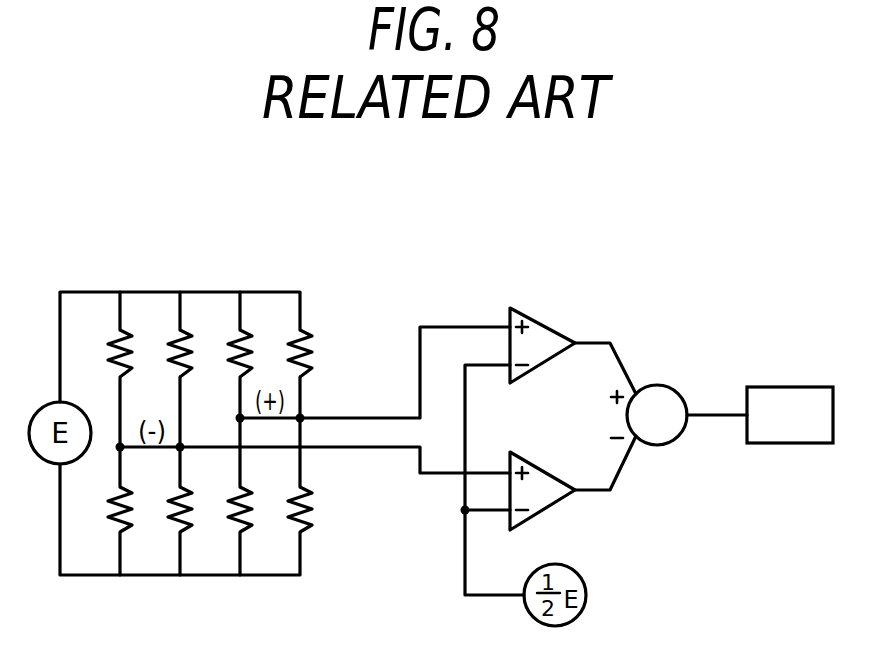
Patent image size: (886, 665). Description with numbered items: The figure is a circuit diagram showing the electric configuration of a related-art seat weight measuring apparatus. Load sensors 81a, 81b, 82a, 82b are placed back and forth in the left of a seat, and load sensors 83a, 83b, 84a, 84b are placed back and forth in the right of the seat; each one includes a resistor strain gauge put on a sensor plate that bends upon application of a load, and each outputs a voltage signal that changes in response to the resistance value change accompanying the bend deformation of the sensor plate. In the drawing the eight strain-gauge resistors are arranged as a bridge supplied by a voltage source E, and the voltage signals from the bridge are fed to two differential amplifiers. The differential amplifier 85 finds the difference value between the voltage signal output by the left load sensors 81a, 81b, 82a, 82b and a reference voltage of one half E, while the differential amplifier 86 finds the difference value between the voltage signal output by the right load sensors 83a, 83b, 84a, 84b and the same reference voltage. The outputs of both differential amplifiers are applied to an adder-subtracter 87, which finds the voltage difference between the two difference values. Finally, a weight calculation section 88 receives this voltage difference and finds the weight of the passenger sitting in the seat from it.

The load sensor 81a is at (118, 332).
The load sensor 82a is at (182, 333).
The load sensor 83a is at (243, 333).
The load sensor 84a is at (305, 333).
The load sensor 81b is at (118, 535).
The load sensor 82b is at (178, 535).
The load sensor 83b is at (246, 535).
The load sensor 84b is at (306, 535).
The differential amplifier 85 is at (545, 322).
The differential amplifier 86 is at (545, 512).
The adder-subtracter 87 is at (668, 388).
The weight calculation section 88 is at (790, 388).